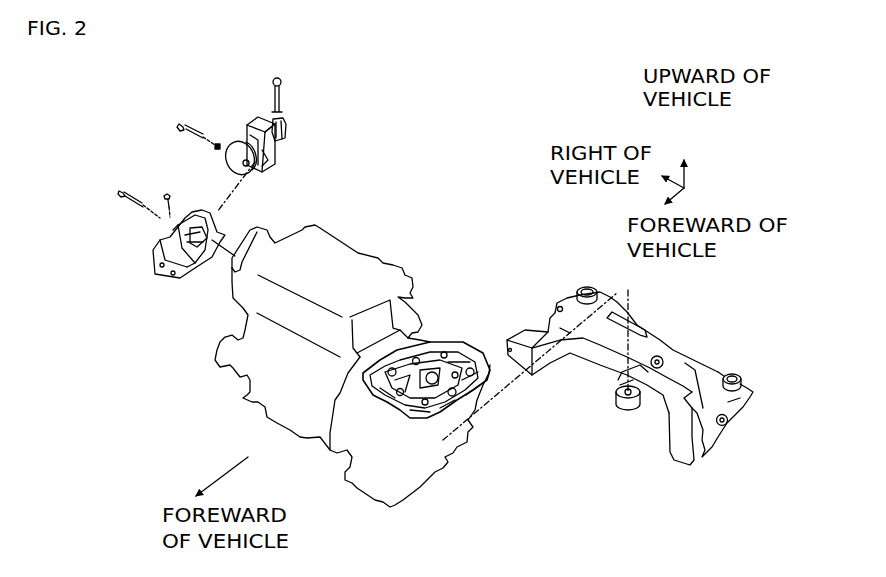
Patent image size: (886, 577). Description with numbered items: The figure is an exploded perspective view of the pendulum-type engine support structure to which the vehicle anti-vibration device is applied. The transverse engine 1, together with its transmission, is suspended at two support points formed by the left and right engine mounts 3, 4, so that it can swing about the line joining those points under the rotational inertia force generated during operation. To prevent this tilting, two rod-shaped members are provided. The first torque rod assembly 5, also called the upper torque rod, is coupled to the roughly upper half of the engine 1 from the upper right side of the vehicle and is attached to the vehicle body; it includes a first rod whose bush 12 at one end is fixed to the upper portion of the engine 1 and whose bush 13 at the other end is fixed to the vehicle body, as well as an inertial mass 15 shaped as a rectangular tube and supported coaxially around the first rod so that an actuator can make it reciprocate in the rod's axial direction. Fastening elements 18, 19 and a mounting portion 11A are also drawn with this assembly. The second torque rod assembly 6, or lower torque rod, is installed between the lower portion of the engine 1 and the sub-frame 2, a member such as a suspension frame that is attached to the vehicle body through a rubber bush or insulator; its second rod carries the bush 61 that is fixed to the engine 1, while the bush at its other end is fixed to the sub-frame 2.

The engine 1 is at (360, 253).
The sub-frame 2 is at (568, 295).
The left engine mount 3 is at (188, 210).
The right engine mount 4 is at (447, 348).
The first torque rod assembly 5 is at (288, 153).
The second torque rod assembly 6 is at (604, 398).
The mounting portion 11A is at (266, 157).
The bush 12 is at (231, 143).
The bush 13 is at (284, 130).
The inertial mass 15 is at (260, 120).
The bolt 18 is at (184, 124).
The bolt 19 is at (279, 84).
The bush 61 is at (622, 410).